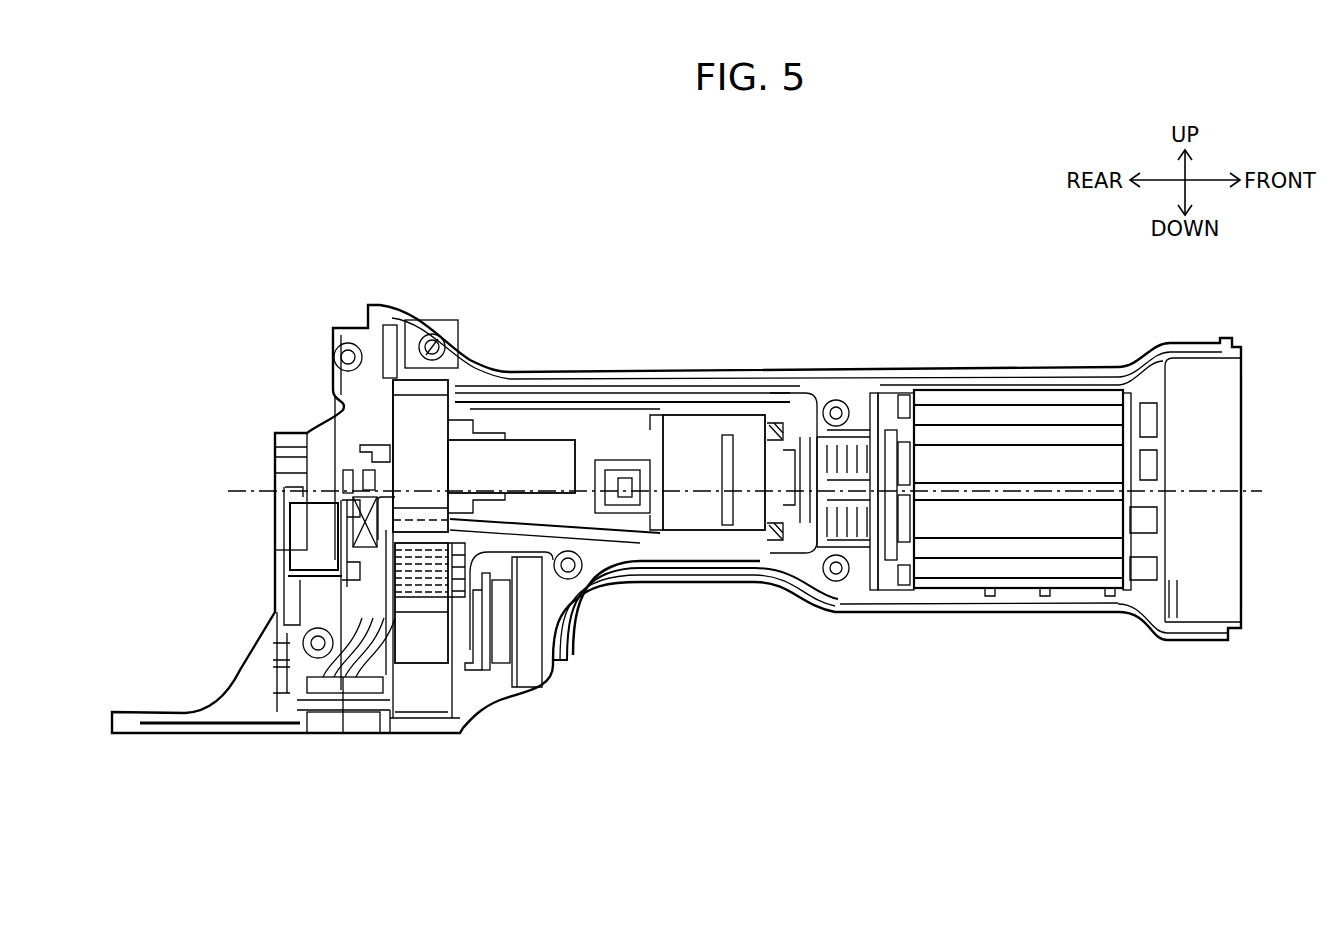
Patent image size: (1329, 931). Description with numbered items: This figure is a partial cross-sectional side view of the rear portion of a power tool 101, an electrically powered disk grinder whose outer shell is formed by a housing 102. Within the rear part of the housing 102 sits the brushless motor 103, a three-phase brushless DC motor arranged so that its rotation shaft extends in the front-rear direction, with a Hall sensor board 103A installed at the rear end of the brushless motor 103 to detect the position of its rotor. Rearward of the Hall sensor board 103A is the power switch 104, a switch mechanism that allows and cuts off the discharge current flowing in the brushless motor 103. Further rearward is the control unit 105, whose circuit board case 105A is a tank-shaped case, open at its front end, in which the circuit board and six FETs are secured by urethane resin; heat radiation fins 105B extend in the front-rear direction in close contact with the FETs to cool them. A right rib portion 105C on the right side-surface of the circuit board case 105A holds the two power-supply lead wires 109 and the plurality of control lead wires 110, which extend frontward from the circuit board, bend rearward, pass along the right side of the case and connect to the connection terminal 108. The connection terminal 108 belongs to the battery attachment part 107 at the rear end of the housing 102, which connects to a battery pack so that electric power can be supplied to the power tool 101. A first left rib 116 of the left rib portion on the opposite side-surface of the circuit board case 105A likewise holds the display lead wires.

The power tool 101 is at (940, 180).
The housing 102 is at (850, 352).
The brushless motor 103 is at (1005, 432).
The Hall sensor board 103A is at (848, 585).
The power switch 104 is at (700, 465).
The control unit 105 is at (570, 232).
The circuit board case 105A is at (415, 430).
The heat radiation fins 105B is at (527, 465).
The right rib portion 105C is at (410, 580).
The battery attachment part 107 is at (293, 428).
The connection terminal 108 is at (307, 537).
The power-supply lead wires 109 is at (475, 525).
The control lead wires 110 is at (487, 590).
The first left rib 116 is at (330, 720).